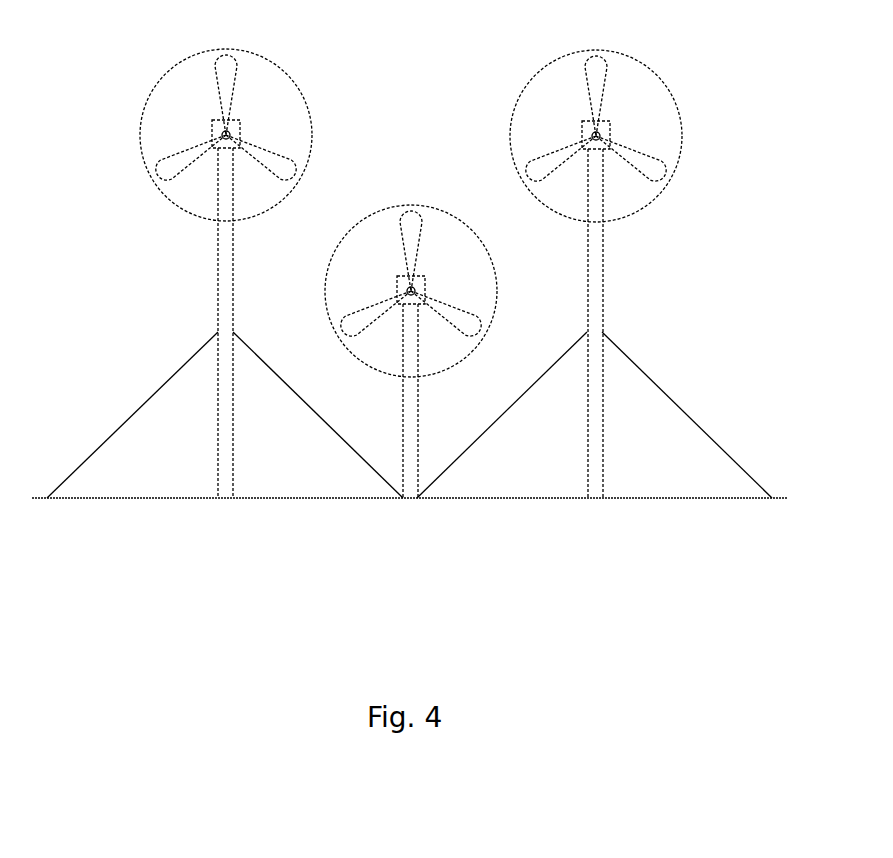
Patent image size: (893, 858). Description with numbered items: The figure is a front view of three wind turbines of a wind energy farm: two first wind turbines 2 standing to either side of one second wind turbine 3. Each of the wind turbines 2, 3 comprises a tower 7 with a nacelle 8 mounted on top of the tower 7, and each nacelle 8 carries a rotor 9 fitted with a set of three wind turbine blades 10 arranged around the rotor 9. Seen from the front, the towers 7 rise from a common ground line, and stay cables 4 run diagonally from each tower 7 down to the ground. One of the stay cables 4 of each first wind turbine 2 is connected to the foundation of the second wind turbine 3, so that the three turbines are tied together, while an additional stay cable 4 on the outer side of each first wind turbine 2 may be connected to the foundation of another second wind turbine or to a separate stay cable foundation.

The first wind turbine 2 is at (133, 63).
The second wind turbine 3 is at (418, 192).
The stay cable 4 is at (137, 407).
The tower 7 is at (227, 285).
The nacelle 8 is at (232, 127).
The rotor 9 is at (225, 135).
The wind turbine blade 10 is at (227, 63).